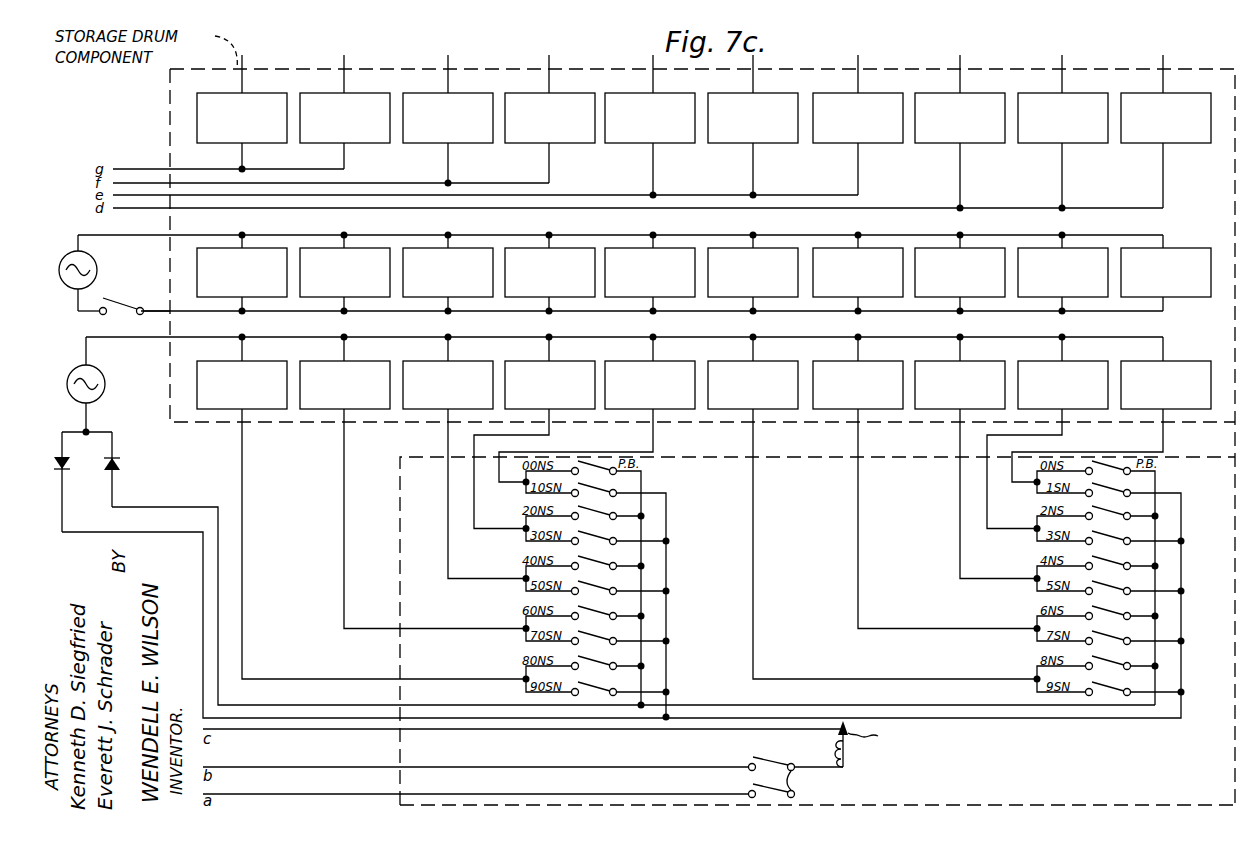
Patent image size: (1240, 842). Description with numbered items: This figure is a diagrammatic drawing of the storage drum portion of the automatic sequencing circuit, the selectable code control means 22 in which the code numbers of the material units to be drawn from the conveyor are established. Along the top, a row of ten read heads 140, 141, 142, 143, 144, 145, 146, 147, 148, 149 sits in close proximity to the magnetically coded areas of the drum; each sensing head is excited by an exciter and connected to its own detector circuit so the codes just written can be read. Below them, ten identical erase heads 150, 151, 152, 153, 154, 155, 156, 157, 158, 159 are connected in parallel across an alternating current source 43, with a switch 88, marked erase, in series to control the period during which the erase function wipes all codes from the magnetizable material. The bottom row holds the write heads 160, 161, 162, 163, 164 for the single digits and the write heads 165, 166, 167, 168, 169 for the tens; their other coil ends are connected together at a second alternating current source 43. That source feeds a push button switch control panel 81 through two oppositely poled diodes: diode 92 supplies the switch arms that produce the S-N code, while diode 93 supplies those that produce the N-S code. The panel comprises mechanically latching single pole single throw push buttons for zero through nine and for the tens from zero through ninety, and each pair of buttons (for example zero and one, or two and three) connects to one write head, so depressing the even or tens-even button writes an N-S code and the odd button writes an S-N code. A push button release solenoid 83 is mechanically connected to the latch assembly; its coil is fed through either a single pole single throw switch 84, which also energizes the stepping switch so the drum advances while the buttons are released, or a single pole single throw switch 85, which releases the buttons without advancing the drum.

The selectable code control means 22 is at (676, 437).
The alternating current source 43 is at (99, 262).
The switch 88 is at (118, 299).
The push button switch control panel 81 is at (400, 515).
The diode 92 is at (66, 471).
The diode 93 is at (122, 465).
The push button release solenoid 83 is at (845, 763).
The single pole single throw switch 84 is at (772, 759).
The single pole single throw switch 85 is at (792, 784).
The read head 140 is at (268, 93).
The read head 141 is at (363, 93).
The read head 142 is at (475, 93).
The read head 143 is at (576, 93).
The read head 144 is at (678, 93).
The read head 145 is at (778, 93).
The read head 146 is at (873, 93).
The read head 147 is at (976, 93).
The read head 148 is at (1080, 93).
The read head 149 is at (1181, 93).
The erase head 150 is at (263, 248).
The erase head 151 is at (373, 248).
The erase head 152 is at (463, 248).
The erase head 153 is at (568, 248).
The erase head 154 is at (663, 248).
The erase head 155 is at (766, 248).
The erase head 156 is at (868, 248).
The erase head 157 is at (971, 248).
The erase head 158 is at (1076, 248).
The erase head 159 is at (1173, 248).
The magnetic recording write head 160 is at (1173, 361).
The write head 161 is at (1066, 361).
The write head 162 is at (969, 361).
The write head 163 is at (864, 361).
The write head 164 is at (763, 361).
The write head 165 is at (669, 361).
The write head 166 is at (561, 361).
The write head 167 is at (456, 361).
The write head 168 is at (353, 361).
The write head 169 is at (253, 361).